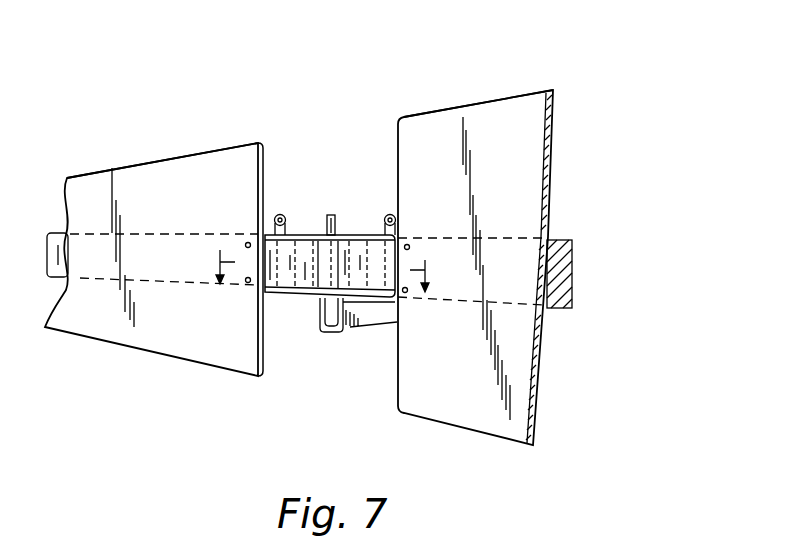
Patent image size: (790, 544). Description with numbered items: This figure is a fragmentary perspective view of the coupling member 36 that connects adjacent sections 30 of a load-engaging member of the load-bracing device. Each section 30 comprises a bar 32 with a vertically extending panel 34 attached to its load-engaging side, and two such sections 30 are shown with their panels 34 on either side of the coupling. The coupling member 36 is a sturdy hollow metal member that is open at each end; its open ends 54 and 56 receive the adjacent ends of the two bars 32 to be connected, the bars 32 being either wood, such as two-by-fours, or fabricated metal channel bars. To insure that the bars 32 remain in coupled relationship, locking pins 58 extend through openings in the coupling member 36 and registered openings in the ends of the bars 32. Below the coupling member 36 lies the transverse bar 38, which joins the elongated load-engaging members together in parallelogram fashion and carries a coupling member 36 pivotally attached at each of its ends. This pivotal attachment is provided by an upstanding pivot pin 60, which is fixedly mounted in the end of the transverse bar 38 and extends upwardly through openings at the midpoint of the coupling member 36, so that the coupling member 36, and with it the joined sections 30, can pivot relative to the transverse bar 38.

The section 30 is at (106, 166).
The bar 32 is at (575, 270).
The panel 34 is at (185, 168).
The coupling member 36 is at (346, 240).
The transverse bar 38 is at (368, 330).
The open end 54 is at (258, 284).
The open end 56 is at (402, 280).
The locking pin 58 is at (273, 217).
The pivot pin 60 is at (329, 212).